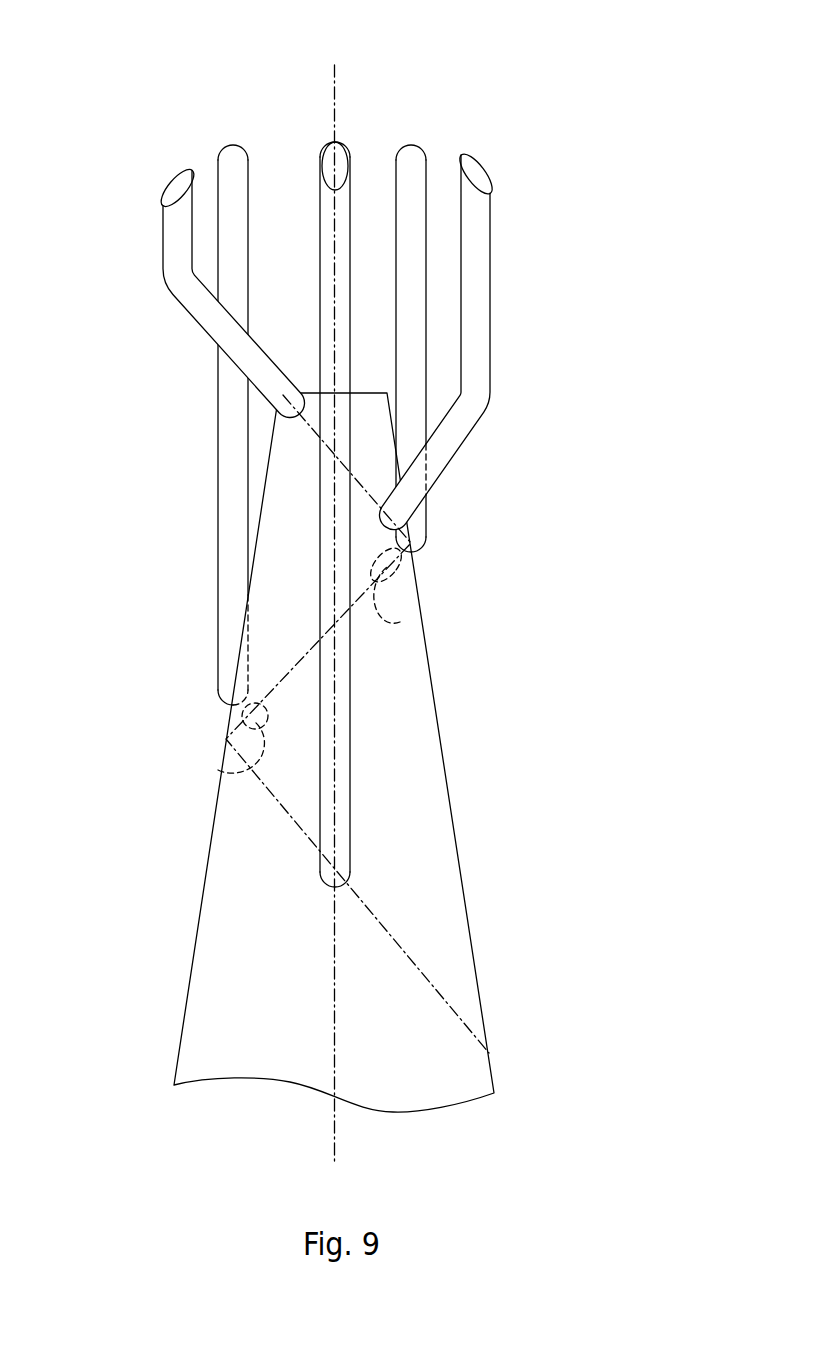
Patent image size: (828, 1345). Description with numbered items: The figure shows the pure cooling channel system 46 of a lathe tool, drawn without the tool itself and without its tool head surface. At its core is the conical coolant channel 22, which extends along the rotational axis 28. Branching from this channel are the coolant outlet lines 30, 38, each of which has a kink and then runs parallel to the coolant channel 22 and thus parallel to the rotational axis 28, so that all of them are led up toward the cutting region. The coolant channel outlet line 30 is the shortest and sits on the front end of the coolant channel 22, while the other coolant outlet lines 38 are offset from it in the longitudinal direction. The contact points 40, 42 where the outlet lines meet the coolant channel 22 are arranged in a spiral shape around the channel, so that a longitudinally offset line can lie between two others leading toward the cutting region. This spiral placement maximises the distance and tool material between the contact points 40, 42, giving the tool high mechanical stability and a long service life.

The coolant channel 22 is at (287, 998).
The rotational axis 28 is at (334, 1145).
The coolant channel outlet line 30 is at (172, 230).
The coolant outlet lines 38 is at (241, 197).
The contact points 40 is at (326, 648).
The contact points 42 is at (286, 408).
The cooling channel system 46 is at (371, 594).